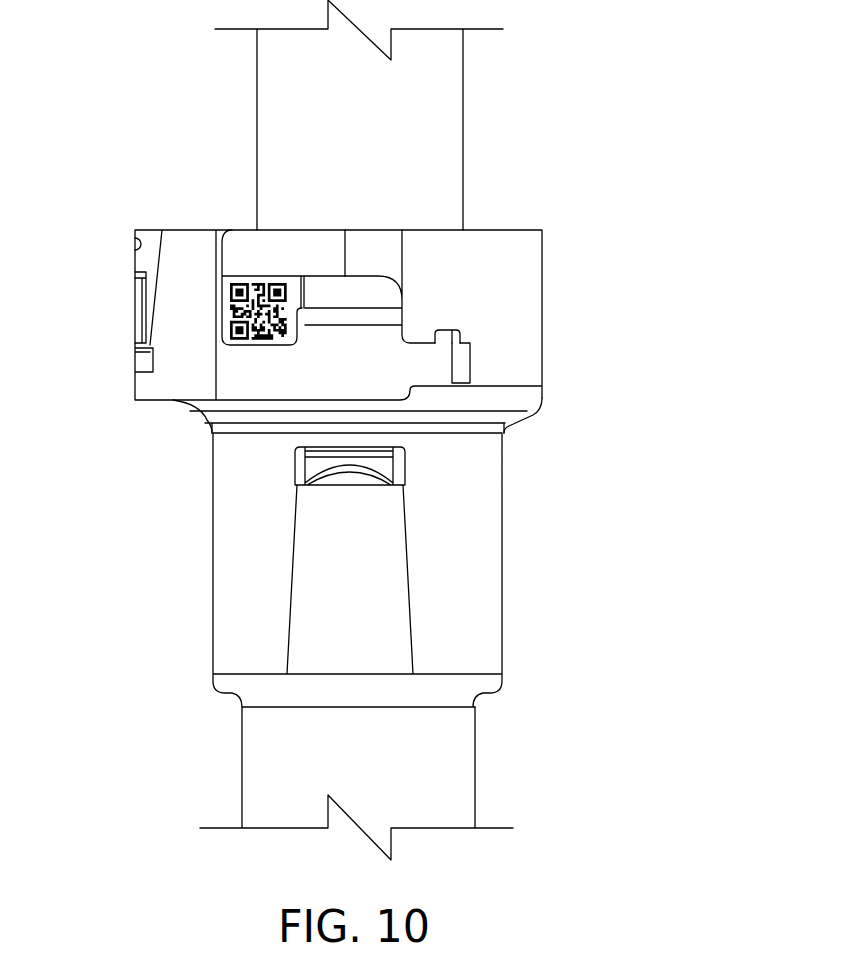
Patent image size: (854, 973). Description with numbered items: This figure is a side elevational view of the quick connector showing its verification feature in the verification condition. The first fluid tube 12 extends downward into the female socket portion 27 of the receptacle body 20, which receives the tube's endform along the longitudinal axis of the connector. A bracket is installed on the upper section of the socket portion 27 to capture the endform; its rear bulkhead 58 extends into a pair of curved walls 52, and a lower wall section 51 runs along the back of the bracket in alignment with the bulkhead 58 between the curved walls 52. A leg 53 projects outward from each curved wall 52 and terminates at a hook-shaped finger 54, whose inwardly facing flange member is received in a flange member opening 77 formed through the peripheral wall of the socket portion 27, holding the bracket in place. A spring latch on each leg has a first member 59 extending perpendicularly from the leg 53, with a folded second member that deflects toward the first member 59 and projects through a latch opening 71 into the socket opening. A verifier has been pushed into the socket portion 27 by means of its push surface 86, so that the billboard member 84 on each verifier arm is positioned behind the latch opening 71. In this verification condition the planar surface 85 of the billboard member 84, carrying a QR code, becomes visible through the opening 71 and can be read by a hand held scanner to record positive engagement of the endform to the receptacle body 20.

The first fluid tube 12 is at (257, 83).
The receptacle body 20 is at (213, 612).
The female socket portion 27 is at (626, 291).
The lower wall section 51 is at (135, 385).
The curved wall 52 is at (167, 388).
The leg 53 is at (240, 378).
The hook-shaped finger 54 is at (463, 368).
The rear bulkhead 58 is at (138, 246).
The first member 59 is at (363, 312).
The latch opening 71 is at (357, 276).
The flange member opening 77 is at (452, 329).
The billboard member 84 is at (245, 276).
The planar surface 85 is at (232, 328).
The push surface 86 is at (140, 292).